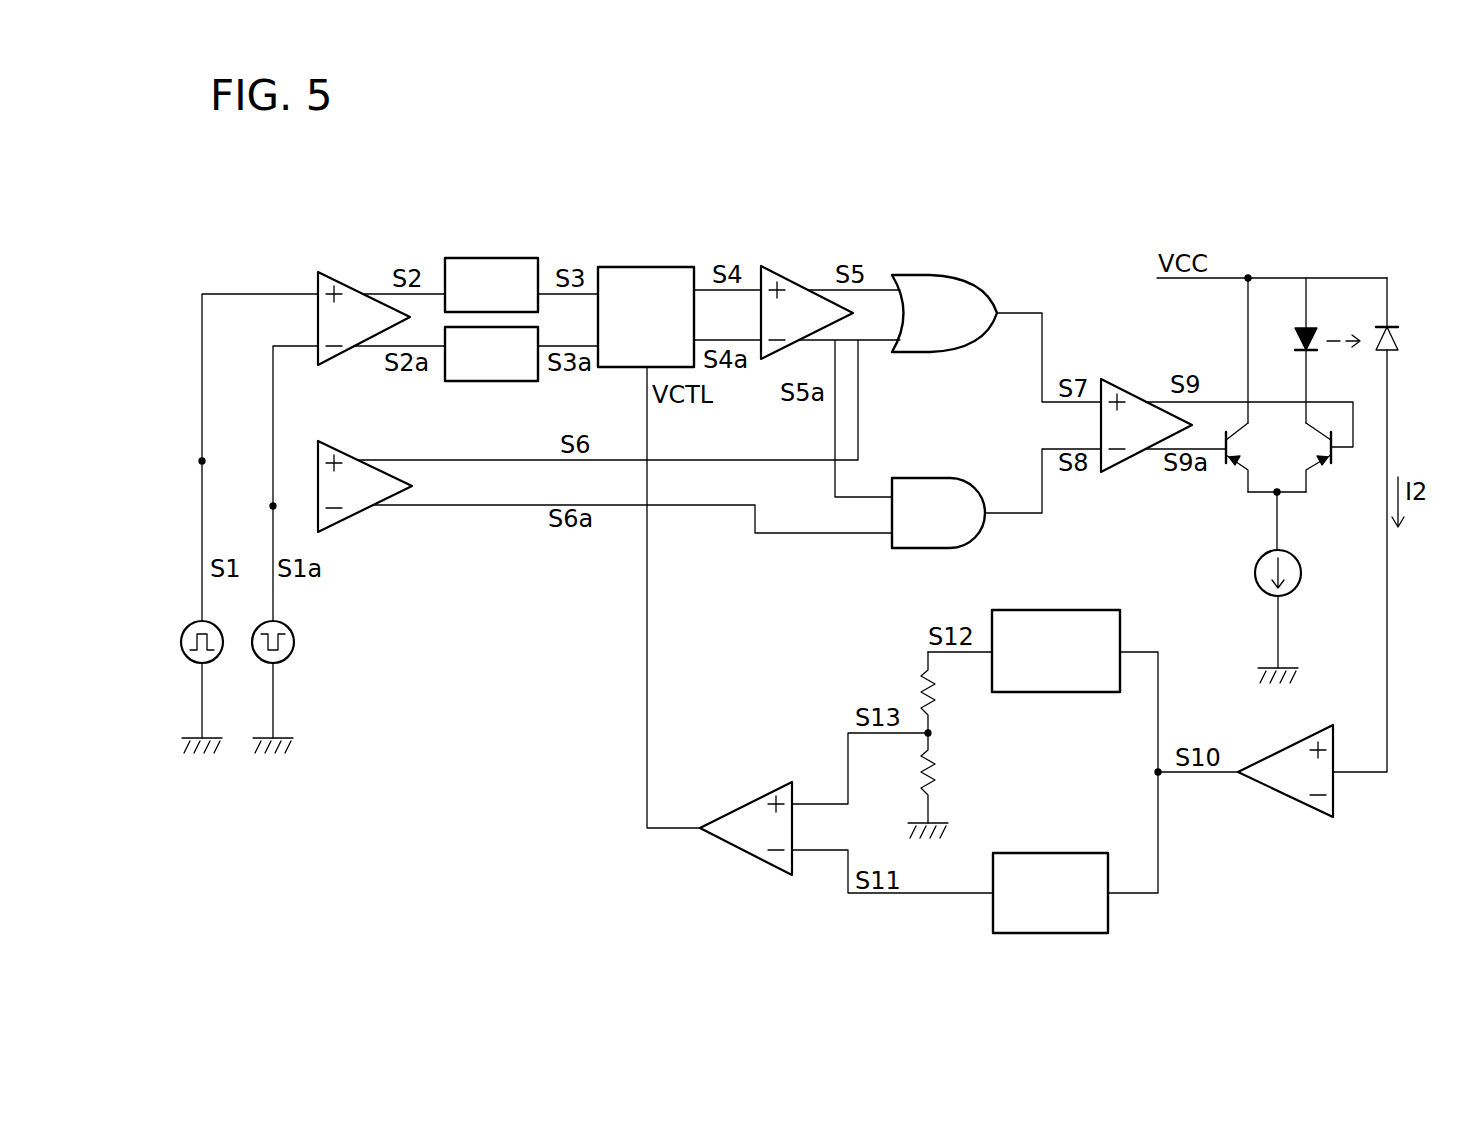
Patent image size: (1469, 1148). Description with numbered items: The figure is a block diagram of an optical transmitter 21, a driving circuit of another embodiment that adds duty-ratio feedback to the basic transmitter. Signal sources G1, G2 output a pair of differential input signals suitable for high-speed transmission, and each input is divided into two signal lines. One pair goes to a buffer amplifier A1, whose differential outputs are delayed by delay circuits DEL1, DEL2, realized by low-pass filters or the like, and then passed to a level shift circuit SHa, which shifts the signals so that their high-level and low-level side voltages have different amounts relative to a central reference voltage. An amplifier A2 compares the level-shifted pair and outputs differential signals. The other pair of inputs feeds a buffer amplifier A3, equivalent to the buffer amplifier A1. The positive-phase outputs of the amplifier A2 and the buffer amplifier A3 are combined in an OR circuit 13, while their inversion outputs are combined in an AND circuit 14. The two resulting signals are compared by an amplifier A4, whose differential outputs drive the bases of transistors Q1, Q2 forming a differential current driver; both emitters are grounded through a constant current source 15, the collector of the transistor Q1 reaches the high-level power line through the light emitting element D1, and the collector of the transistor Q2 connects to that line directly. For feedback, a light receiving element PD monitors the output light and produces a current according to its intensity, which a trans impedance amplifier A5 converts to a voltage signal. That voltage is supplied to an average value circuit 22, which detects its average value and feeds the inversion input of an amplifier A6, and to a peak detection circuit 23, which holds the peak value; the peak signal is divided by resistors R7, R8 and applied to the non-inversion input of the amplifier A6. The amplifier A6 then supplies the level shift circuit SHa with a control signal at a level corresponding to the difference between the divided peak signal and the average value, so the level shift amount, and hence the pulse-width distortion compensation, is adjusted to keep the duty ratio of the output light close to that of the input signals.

The optical transmitter 21 is at (296, 206).
The OR circuit 13 is at (922, 275).
The AND circuit 14 is at (935, 478).
The constant current source 15 is at (1302, 573).
The average value circuit 22 is at (1053, 853).
The peak detection circuit 23 is at (1057, 610).
The buffer amplifier A1 is at (350, 282).
The amplifier A2 is at (795, 280).
The buffer amplifier A3 is at (350, 455).
The amplifier A4 is at (1130, 393).
The trans impedance amplifier A5 is at (1300, 820).
The amplifier A6 is at (767, 792).
The delay circuit DEL1 is at (491, 258).
The delay circuit DEL2 is at (490, 381).
The level shift circuit SHa is at (645, 267).
The signal source G1 is at (190, 626).
The signal source G2 is at (296, 642).
The transistor Q1 is at (1335, 463).
The transistor Q2 is at (1215, 475).
The laser diode D1 is at (1296, 344).
The light receiving element PD is at (1398, 338).
The resistor R7 is at (920, 677).
The resistor R8 is at (938, 772).